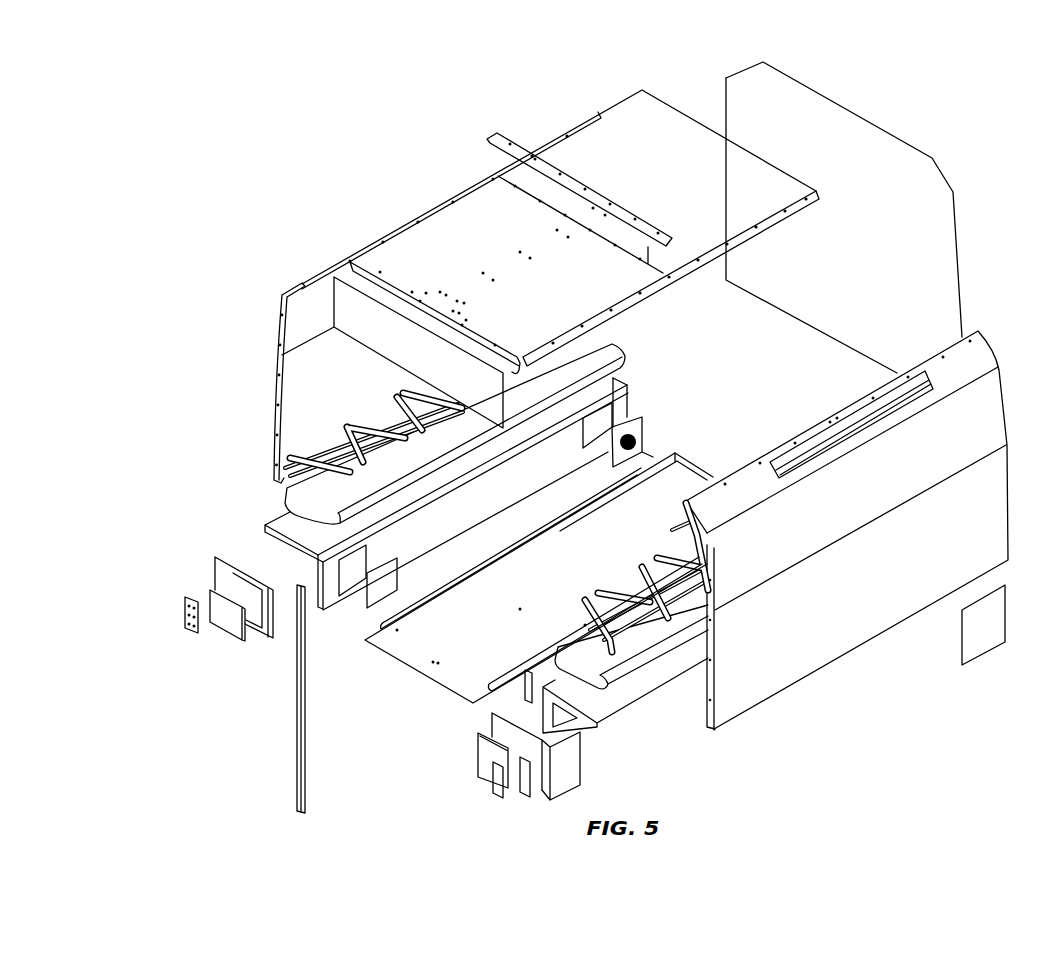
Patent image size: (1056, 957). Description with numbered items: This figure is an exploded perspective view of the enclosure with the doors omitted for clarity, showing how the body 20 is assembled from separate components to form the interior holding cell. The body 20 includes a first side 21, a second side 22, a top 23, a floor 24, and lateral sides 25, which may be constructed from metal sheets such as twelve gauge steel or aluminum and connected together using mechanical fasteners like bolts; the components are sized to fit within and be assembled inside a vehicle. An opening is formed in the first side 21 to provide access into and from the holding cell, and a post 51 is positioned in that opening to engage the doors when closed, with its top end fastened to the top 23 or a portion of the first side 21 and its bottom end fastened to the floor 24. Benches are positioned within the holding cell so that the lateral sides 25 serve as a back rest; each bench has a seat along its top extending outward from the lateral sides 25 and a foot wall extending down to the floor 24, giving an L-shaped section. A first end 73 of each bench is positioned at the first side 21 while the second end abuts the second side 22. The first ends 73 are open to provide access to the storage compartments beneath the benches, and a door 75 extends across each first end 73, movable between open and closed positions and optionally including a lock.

The body 20 is at (535, 122).
The first side 21 is at (377, 330).
The second side 22 is at (882, 155).
The top 23 is at (652, 123).
The floor 24 is at (410, 652).
The lateral sides 25 is at (302, 387).
The post 51 is at (302, 767).
The first end 73 is at (285, 558).
The door 75 is at (225, 615).